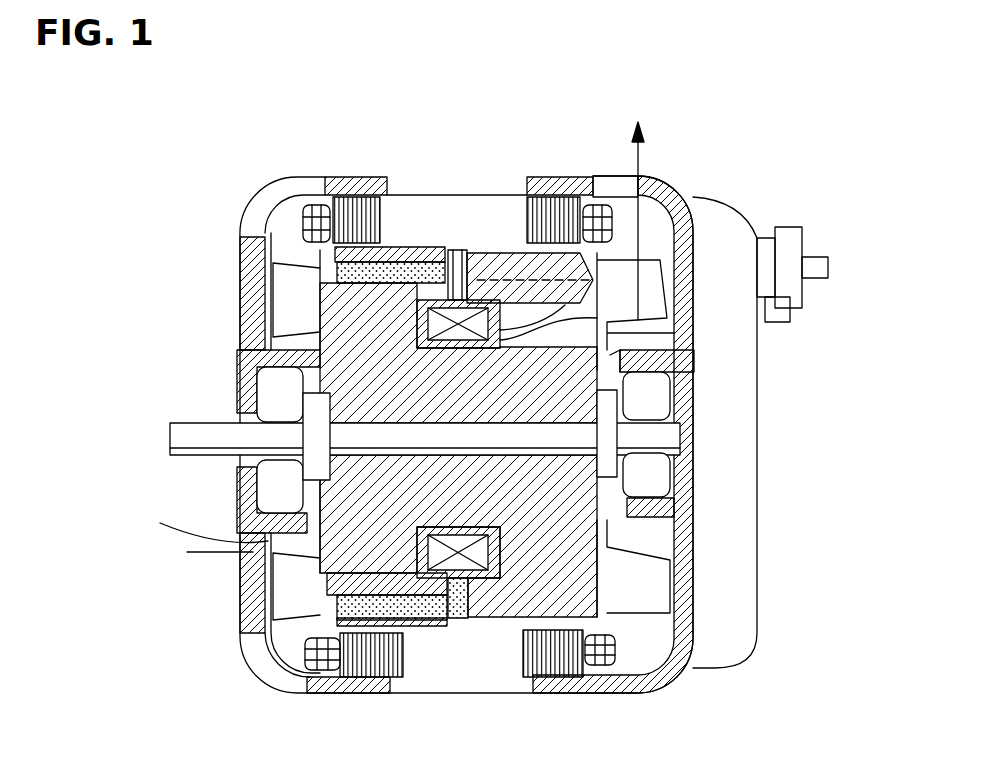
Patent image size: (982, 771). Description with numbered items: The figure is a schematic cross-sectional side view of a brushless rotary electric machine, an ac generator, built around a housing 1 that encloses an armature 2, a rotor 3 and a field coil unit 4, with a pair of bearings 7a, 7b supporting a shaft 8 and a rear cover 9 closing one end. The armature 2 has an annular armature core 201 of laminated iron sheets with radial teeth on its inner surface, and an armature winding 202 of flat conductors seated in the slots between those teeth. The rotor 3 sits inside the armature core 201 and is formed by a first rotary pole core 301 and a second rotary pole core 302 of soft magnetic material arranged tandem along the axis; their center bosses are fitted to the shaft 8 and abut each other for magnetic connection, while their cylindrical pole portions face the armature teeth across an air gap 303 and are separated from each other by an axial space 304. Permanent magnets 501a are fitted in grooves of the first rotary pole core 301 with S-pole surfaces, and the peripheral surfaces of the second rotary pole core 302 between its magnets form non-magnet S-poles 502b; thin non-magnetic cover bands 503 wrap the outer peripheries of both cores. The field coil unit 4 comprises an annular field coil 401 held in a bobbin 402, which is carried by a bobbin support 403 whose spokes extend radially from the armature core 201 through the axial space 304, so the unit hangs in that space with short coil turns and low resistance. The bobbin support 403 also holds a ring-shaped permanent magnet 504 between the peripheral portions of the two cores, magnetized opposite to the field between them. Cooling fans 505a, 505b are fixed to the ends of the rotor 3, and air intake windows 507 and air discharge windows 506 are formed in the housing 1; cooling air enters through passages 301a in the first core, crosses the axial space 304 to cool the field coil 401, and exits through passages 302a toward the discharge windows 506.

The housing 1 is at (356, 215).
The armature 2 is at (464, 186).
The rotor 3 is at (589, 604).
The field coil unit 4 is at (286, 423).
The bearing 7a is at (288, 398).
The bearing 7b is at (655, 472).
The shaft 8 is at (665, 431).
The rear cover 9 is at (755, 376).
The armature core 201 is at (318, 225).
The armature winding 202 is at (257, 250).
The first rotary pole core 301 is at (345, 270).
The cooling air passage 301a is at (348, 585).
The second rotary pole core 302 is at (532, 283).
The cooling air passage 302a is at (618, 265).
The air gap 303 is at (400, 260).
The axial space 304 is at (472, 255).
The field coil 401 is at (422, 310).
The bobbin 402 is at (432, 323).
The bobbin support 403 is at (456, 250).
The permanent magnet 501a is at (420, 272).
The non-magnet S-pole 502b is at (500, 245).
The cover band 503 is at (406, 640).
The ring-shaped permanent magnet 504 is at (462, 625).
The cooling fan 505a is at (298, 598).
The cooling fan 505b is at (693, 633).
The air discharge window 506 is at (656, 191).
The air intake window 507 is at (256, 553).